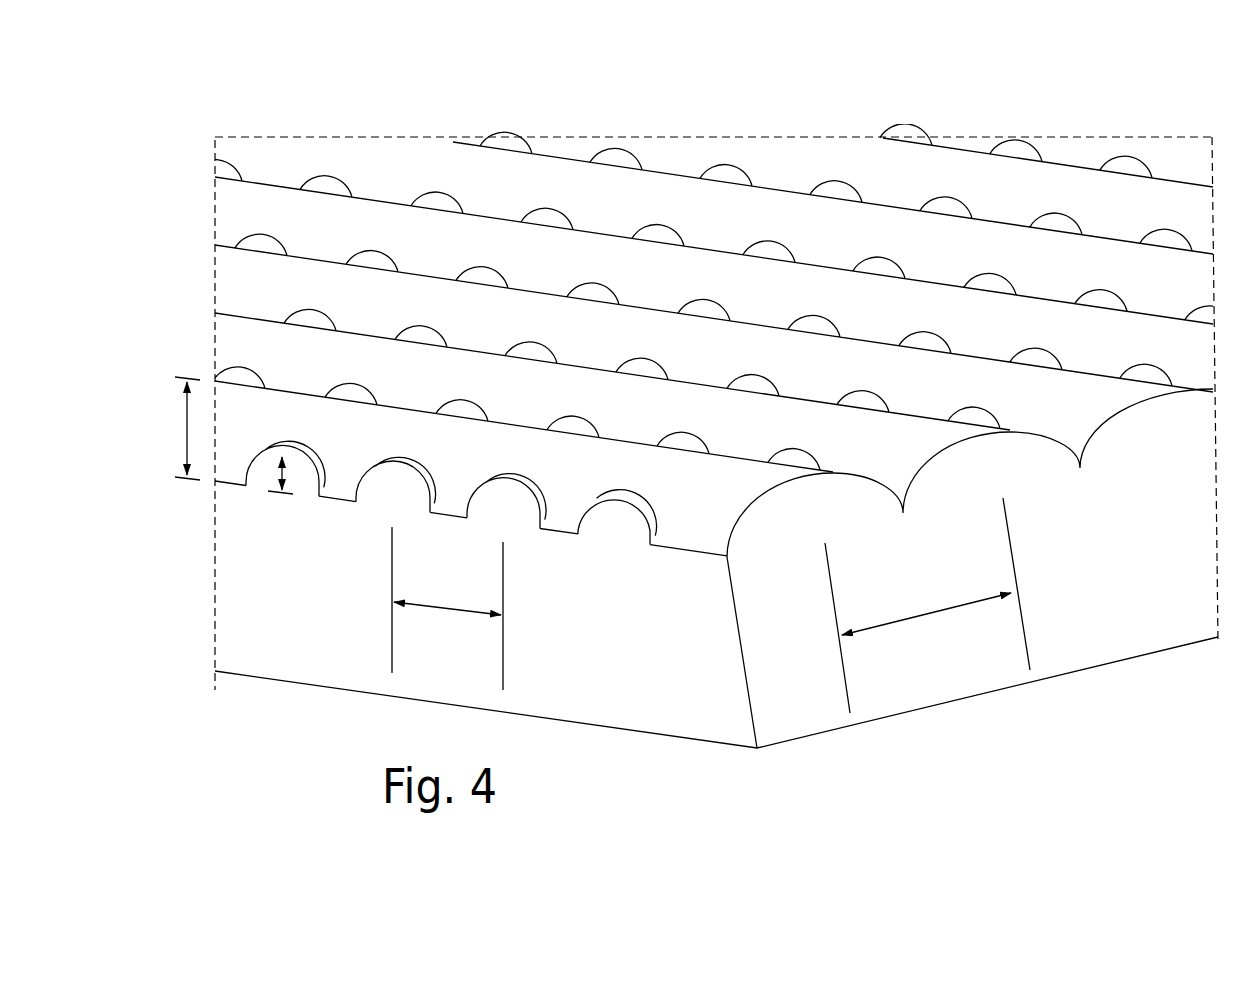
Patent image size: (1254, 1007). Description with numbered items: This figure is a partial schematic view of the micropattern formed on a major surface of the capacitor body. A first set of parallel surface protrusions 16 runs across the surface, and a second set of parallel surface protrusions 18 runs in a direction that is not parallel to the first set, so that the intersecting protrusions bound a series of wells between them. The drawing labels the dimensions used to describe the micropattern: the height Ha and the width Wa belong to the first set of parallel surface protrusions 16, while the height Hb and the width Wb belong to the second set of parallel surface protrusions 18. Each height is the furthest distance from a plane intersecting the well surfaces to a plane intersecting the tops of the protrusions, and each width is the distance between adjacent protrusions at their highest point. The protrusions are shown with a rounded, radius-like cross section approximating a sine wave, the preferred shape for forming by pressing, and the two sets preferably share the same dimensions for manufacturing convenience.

The first set of parallel surface protrusions 16 is at (1058, 400).
The second set of parallel surface protrusions 18 is at (397, 467).
The height of the first set of parallel surface protrusions Ha is at (176, 428).
The height of the second set of parallel surface protrusions Hb is at (279, 473).
The width of the first set of parallel surface protrusions Wa is at (927, 605).
The width of the second set of parallel surface protrusions Wb is at (447, 608).